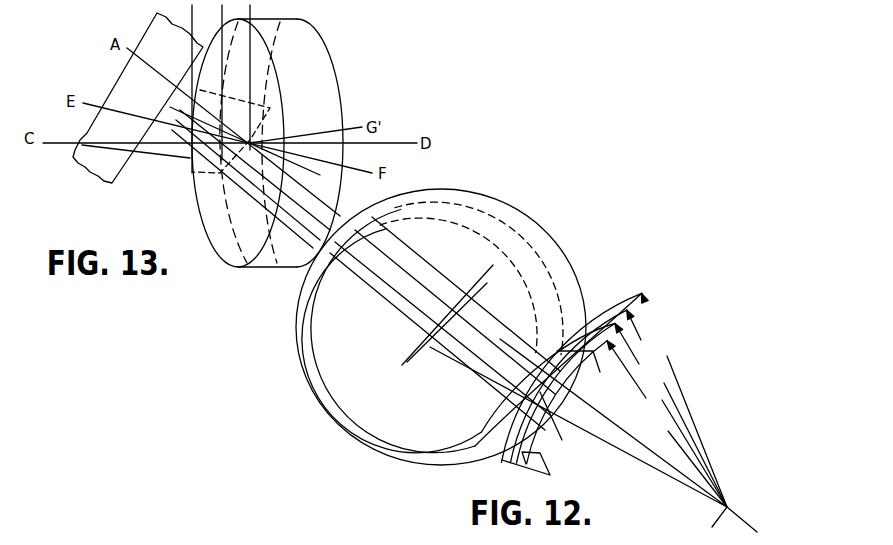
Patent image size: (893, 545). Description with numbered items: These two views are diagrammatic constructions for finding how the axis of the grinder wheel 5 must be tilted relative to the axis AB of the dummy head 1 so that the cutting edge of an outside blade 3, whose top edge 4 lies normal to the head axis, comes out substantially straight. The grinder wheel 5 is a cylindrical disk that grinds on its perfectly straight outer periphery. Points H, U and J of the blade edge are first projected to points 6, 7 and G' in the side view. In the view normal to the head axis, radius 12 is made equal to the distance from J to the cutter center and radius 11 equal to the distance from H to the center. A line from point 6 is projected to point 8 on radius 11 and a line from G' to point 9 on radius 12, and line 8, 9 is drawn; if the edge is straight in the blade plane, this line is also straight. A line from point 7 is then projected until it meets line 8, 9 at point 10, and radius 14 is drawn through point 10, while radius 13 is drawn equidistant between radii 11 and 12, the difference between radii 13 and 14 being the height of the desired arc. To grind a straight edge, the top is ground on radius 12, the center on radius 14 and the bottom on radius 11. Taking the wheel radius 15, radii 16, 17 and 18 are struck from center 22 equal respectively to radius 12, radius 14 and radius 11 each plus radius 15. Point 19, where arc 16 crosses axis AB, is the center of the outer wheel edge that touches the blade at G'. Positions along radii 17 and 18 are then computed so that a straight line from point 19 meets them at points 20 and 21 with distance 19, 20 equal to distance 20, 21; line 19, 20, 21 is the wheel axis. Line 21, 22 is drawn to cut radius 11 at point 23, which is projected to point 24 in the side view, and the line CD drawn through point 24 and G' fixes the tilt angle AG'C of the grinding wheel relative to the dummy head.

In FIG. 13, the dummy head 1 is at (100, 165).
In FIG. 13, the blade 3 is at (170, 153).
In FIG. 12, the blade 3 is at (502, 452).
In FIG. 13, the top edge of the blade 4 is at (265, 120).
In FIG. 13, the grinder wheel 5 is at (322, 72).
In FIG. 12, the grinder wheel 5 is at (500, 192).
In FIG. 13, the projected point 6 is at (192, 128).
In FIG. 13, the projected point 7 is at (237, 135).
In FIG. 12, the point on radius 11 8 is at (520, 393).
In FIG. 12, the point on radius 12 9 is at (562, 377).
In FIG. 12, the intersection point 10 is at (560, 424).
In FIG. 12, the radius 11 is at (684, 400).
In FIG. 12, the radius 12 is at (667, 424).
In FIG. 12, the radius 13 is at (677, 408).
In FIG. 12, the radius 14 is at (671, 416).
In FIG. 12, the radius of the grinding wheel 15 is at (422, 417).
In FIG. 12, the radius 16 is at (545, 343).
In FIG. 12, the radius 17 is at (540, 318).
In FIG. 12, the radius 18 is at (414, 362).
In FIG. 12, the point 19 is at (465, 308).
In FIG. 12, the point 20 is at (437, 323).
In FIG. 12, the point 21 is at (418, 338).
In FIG. 12, the center 22 is at (727, 507).
In FIG. 12, the intersection point 23 is at (513, 410).
In FIG. 13, the projected point 24 is at (187, 160).